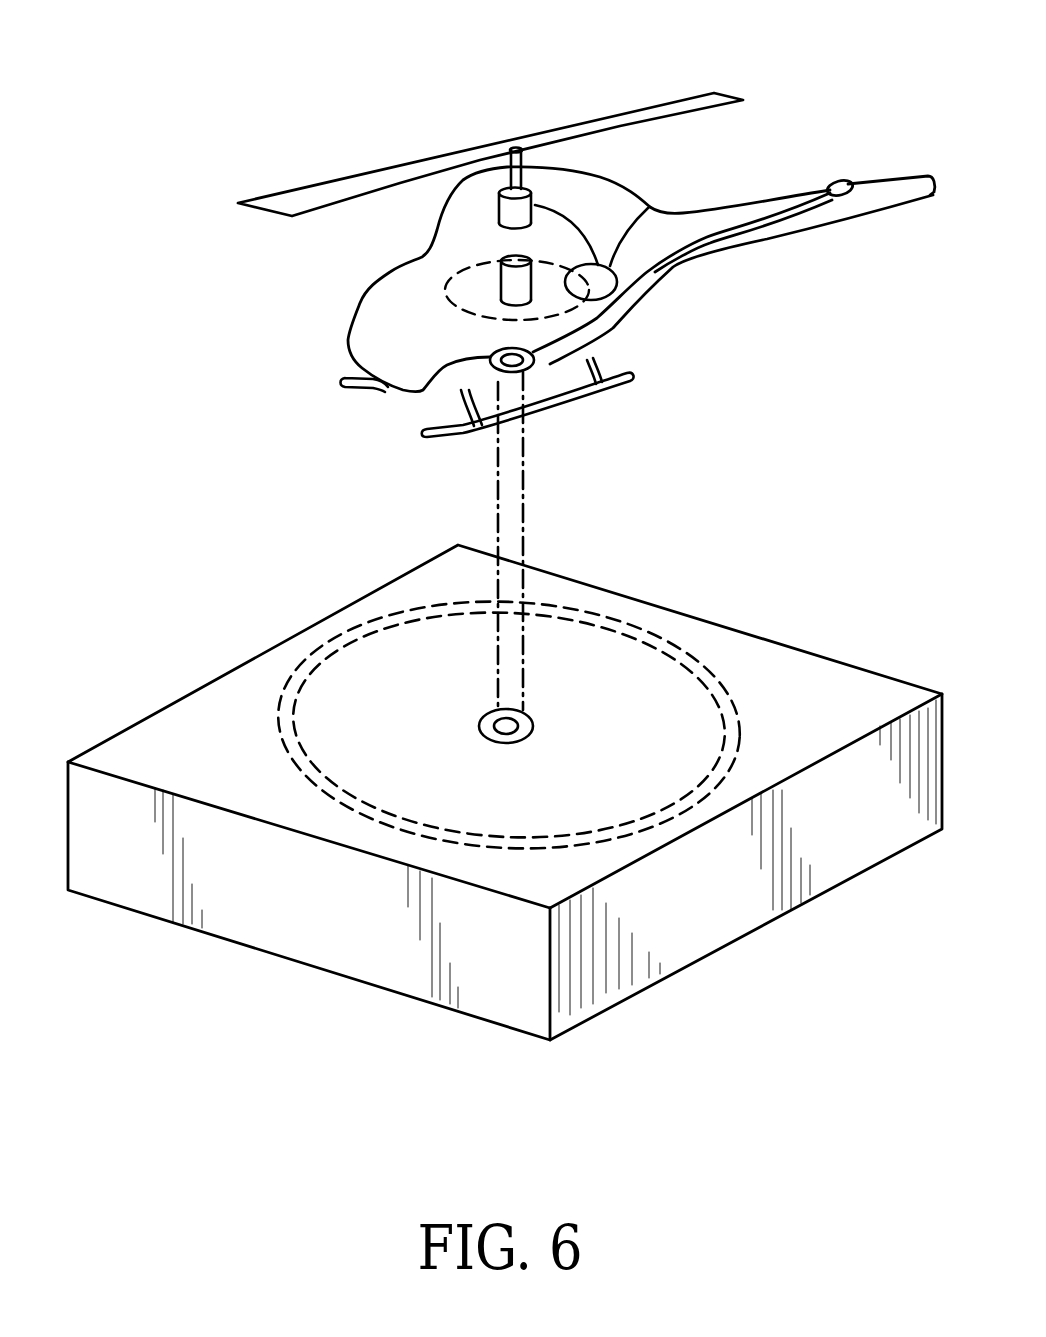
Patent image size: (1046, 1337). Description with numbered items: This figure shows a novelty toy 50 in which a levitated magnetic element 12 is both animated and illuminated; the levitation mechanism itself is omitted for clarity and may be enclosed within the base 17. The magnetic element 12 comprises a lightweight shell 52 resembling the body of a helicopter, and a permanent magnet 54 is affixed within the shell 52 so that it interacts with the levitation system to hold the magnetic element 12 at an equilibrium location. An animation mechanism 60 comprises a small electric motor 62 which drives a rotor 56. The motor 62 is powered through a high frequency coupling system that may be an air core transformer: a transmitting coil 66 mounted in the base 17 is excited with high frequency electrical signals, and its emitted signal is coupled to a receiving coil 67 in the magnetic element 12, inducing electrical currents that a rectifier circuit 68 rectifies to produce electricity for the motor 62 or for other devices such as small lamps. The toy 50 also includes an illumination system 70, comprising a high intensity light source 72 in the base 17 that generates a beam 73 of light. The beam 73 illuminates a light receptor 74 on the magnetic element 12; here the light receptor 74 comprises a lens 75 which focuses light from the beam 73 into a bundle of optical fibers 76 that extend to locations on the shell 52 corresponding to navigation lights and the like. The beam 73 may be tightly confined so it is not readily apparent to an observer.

The magnetic element 12 is at (318, 294).
The base 17 is at (818, 685).
The novelty toy 50 is at (205, 378).
The lightweight shell 52 is at (705, 205).
The permanent magnet 54 is at (501, 272).
The rotor 56 is at (674, 104).
The animation mechanism 60 is at (478, 102).
The electric motor 62 is at (499, 210).
The transmitting coil 66 is at (658, 633).
The receiving coil 67 is at (452, 306).
The rectifier circuit 68 is at (650, 206).
The illumination system 70 is at (478, 490).
The light source 72 is at (534, 725).
The beam 73 is at (526, 489).
The light receptor 74 is at (422, 393).
The lens 75 is at (527, 366).
The optical fibers 76 is at (779, 222).